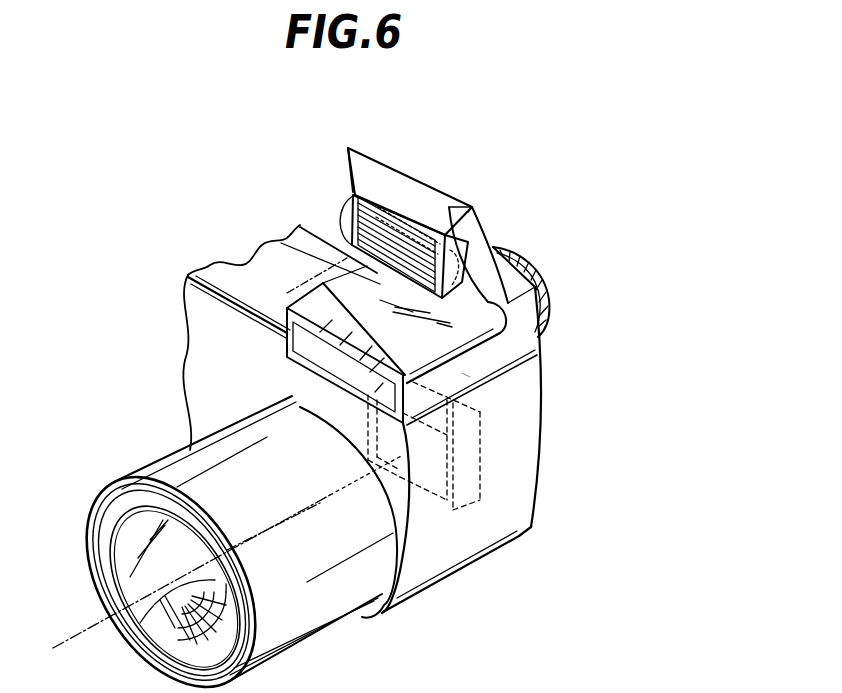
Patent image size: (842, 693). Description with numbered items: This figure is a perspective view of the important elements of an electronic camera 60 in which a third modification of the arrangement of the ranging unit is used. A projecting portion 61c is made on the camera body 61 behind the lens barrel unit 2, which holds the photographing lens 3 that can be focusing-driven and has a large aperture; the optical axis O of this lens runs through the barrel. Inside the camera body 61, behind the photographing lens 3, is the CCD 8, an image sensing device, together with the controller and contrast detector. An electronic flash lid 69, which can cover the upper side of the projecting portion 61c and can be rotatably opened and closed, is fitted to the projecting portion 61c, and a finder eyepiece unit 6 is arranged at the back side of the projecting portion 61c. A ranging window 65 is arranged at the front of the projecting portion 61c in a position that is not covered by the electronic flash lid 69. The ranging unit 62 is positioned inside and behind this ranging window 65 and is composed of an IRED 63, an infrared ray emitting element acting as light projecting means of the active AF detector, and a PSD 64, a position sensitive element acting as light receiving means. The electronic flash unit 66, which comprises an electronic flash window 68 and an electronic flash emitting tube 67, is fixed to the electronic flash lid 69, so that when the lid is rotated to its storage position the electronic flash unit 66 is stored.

The lens barrel unit 2 is at (315, 607).
The photographing lens 3 is at (123, 558).
The optical axis O is at (62, 632).
The finder eyepiece unit 6 is at (533, 262).
The CCD 8 is at (480, 443).
The electronic camera 60 is at (229, 246).
The camera body 61 is at (462, 553).
The projecting portion 61c is at (462, 373).
The ranging unit 62 is at (108, 358).
The IRED 63 is at (350, 394).
The PSD 64 is at (285, 366).
The ranging window 65 is at (298, 343).
The electronic flash unit 66 is at (475, 120).
The electronic flash emitting tube 67 is at (407, 224).
The electronic flash window 68 is at (356, 194).
The electronic flash lid 69 is at (480, 228).